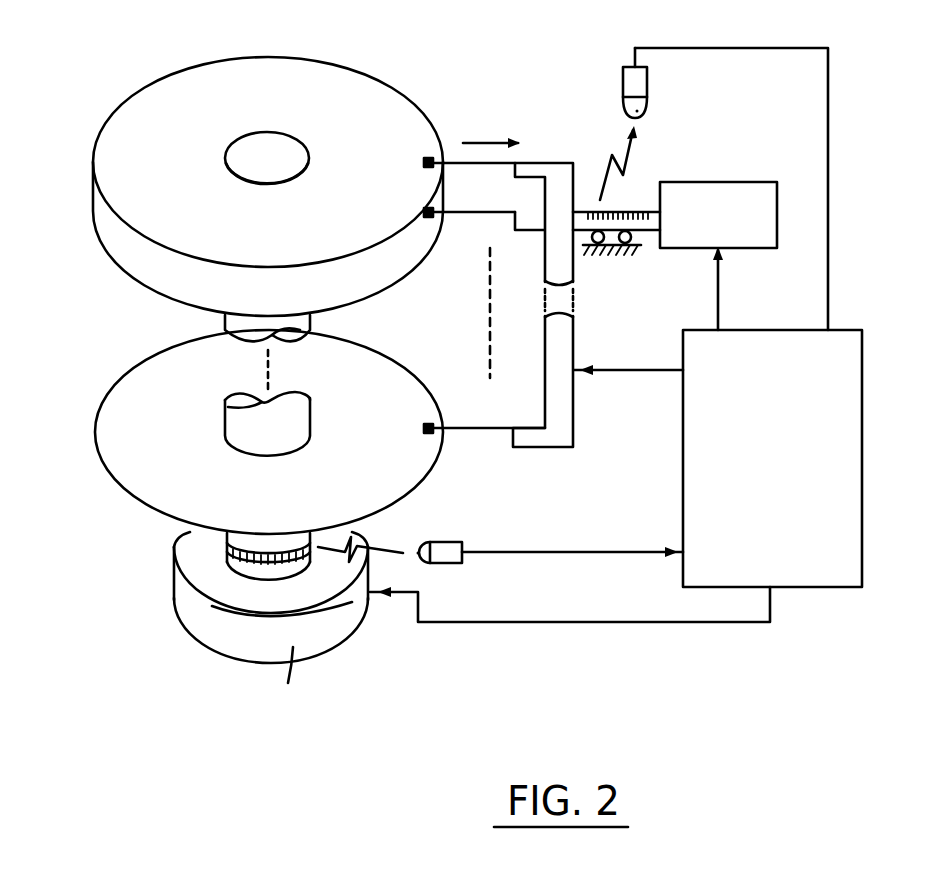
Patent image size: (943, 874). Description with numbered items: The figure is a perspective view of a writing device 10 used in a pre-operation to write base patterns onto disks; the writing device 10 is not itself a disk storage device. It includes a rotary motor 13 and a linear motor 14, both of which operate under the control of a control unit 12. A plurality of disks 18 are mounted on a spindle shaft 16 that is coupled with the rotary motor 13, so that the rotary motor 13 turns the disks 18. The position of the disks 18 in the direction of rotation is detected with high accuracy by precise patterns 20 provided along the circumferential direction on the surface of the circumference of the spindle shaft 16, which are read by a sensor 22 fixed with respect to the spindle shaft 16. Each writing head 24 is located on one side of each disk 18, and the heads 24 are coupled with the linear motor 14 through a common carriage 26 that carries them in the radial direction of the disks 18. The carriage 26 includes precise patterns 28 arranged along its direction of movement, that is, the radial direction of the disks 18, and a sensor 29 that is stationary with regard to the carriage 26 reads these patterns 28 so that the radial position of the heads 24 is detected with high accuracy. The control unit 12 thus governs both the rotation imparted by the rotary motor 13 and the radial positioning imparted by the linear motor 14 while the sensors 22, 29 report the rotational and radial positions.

The writing device 10 is at (657, 36).
The control unit 12 is at (787, 530).
The rotary motor 13 is at (175, 607).
The linear motor 14 is at (716, 182).
The spindle shaft 16 is at (235, 426).
The disks 18 is at (106, 230).
The precise patterns 20 is at (214, 553).
The sensor 22 is at (441, 550).
The writing heads 24 is at (420, 164).
The carriage 26 is at (557, 173).
The precise patterns 28 is at (630, 207).
The sensor 29 is at (647, 86).